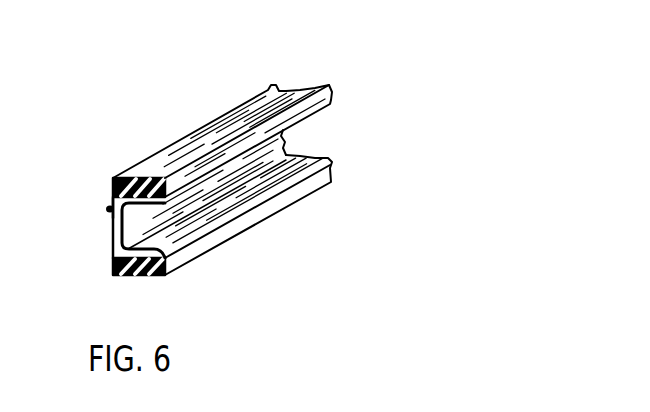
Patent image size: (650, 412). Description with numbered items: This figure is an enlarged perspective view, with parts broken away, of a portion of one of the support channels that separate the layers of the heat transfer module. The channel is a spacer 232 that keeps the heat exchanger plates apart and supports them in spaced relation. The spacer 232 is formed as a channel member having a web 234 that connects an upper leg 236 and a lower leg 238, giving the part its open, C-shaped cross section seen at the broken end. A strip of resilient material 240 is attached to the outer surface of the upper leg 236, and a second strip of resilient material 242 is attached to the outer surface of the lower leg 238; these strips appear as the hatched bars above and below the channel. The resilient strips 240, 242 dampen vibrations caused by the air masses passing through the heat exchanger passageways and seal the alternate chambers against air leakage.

The strip of resilient material 240 is at (170, 156).
The strip of resilient material 242 is at (142, 276).
The web 234 is at (113, 239).
The spacer 232 is at (110, 208).
The upper leg 236 is at (165, 201).
The lower leg 238 is at (167, 243).